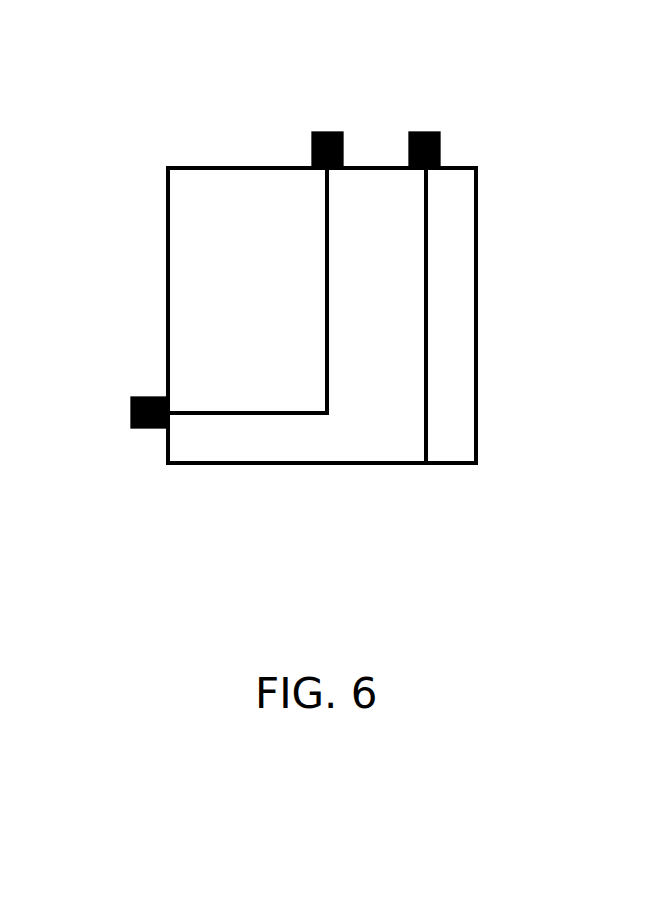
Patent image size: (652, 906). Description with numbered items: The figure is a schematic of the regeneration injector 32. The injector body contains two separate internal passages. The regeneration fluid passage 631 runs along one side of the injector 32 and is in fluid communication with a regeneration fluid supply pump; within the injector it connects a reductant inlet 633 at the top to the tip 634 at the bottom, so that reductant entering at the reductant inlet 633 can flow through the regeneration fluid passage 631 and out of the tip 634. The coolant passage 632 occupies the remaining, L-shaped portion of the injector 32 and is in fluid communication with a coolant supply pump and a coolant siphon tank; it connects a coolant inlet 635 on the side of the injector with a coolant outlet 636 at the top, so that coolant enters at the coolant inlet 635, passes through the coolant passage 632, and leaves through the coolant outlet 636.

The regeneration injector 32 is at (234, 236).
The regeneration fluid passage 631 is at (426, 345).
The coolant passage 632 is at (328, 315).
The reductant inlet 633 is at (433, 132).
The tip 634 is at (427, 465).
The coolant inlet 635 is at (133, 428).
The coolant outlet 636 is at (322, 132).